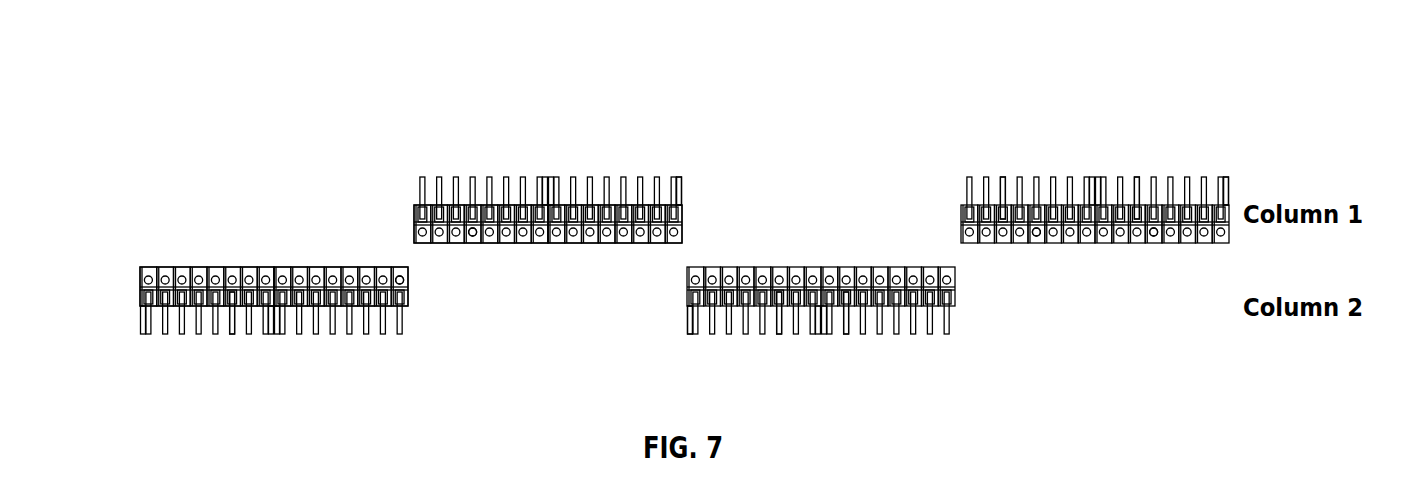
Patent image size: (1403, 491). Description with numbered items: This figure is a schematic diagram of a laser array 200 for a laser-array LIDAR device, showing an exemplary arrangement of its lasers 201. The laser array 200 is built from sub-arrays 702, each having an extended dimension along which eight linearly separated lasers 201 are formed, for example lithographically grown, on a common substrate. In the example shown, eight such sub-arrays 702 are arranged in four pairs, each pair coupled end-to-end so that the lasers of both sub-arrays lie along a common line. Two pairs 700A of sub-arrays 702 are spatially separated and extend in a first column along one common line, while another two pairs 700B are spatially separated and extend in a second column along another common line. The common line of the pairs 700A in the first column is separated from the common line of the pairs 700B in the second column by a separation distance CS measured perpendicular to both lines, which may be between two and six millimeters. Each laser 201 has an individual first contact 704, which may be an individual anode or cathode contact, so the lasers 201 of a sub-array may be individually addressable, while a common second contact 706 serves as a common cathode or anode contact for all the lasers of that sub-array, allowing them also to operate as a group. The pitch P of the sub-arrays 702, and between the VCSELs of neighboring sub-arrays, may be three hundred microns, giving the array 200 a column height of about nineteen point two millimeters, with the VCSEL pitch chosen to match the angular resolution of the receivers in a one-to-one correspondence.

The laser array 200 is at (1232, 86).
The lasers 201 is at (403, 283).
The pairs of sub-arrays in first column 700A is at (547, 136).
The pairs of sub-arrays in second column 700B is at (275, 228).
The sub-arrays 702 is at (683, 167).
The first contacts 704 is at (232, 335).
The second contact 706 is at (683, 190).
The separation distance CS is at (116, 200).
The pitch P is at (556, 247).